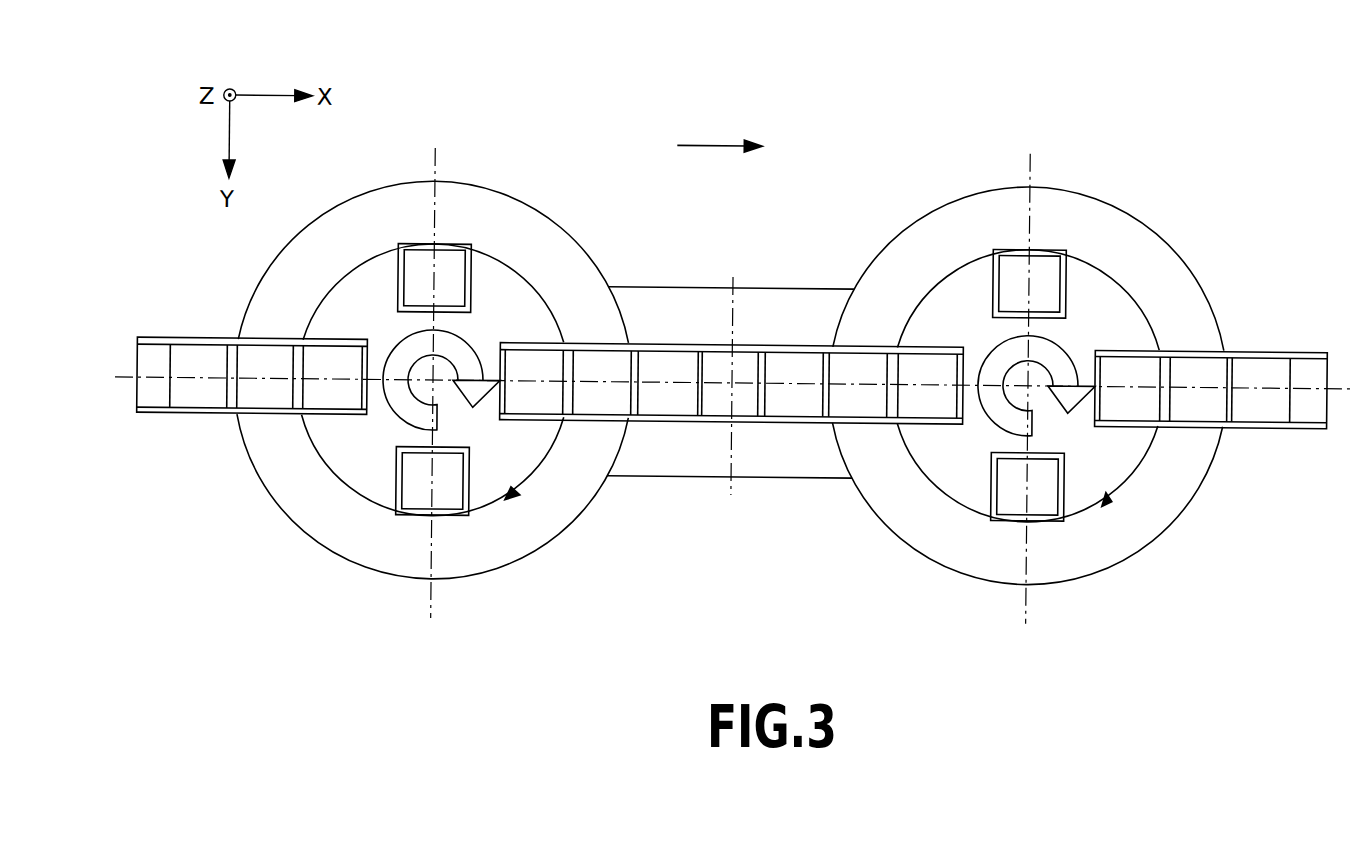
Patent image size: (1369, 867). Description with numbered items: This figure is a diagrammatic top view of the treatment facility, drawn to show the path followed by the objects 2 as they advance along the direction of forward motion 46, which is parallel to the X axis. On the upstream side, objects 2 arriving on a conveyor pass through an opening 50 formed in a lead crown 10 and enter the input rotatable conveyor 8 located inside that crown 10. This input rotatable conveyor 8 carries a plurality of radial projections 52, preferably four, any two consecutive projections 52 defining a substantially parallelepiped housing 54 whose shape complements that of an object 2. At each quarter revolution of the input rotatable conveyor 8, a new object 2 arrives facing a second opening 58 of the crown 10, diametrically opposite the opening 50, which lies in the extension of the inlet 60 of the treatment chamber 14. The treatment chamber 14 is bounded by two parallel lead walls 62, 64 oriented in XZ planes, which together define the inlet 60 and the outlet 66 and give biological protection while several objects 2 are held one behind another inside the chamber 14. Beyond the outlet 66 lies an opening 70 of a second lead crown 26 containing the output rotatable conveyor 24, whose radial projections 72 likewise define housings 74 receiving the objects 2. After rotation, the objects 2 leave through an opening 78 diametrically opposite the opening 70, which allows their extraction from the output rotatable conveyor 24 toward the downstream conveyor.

The object 2 is at (780, 405).
The input rotatable conveyor 8 is at (514, 497).
The crown 10 is at (317, 518).
The treatment chamber 14 is at (703, 342).
The output rotatable conveyor 24 is at (1108, 492).
The crown 26 is at (908, 238).
The direction of forward motion of the objects 46 is at (719, 131).
The opening 50 is at (263, 347).
The radial projections 52 is at (487, 489).
The housing 54 is at (403, 276).
The opening 58 is at (602, 346).
The inlet 60 is at (658, 342).
The wall 62 is at (819, 470).
The wall 64 is at (790, 285).
The outlet 66 is at (818, 343).
The opening 70 is at (867, 356).
The radial projections 72 is at (1127, 321).
The housing 74 is at (1117, 420).
The opening 78 is at (1194, 344).